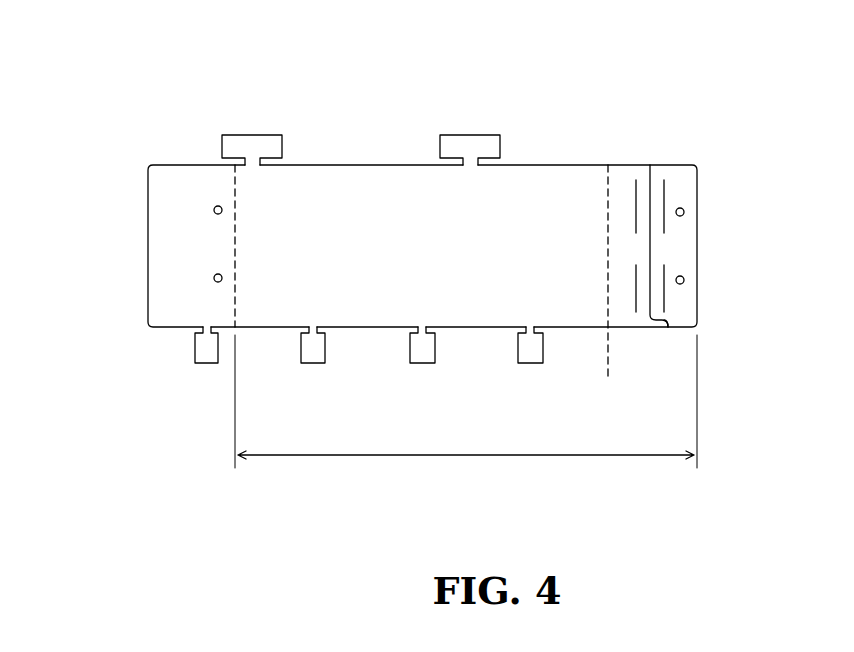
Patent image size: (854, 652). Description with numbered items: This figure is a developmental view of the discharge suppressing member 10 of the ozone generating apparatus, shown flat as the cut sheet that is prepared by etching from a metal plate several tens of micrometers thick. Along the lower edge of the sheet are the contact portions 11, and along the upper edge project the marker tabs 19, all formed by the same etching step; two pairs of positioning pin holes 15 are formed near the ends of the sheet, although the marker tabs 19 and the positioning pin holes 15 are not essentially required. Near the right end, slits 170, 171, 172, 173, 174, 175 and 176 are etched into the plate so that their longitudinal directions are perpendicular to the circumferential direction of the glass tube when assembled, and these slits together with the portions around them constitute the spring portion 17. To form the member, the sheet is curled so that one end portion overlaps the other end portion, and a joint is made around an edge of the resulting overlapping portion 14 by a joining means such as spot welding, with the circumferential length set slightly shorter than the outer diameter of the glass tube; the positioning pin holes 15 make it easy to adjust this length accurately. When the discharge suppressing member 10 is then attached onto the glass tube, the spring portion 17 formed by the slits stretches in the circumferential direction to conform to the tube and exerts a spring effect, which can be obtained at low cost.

The discharge suppressing member 10 is at (369, 40).
The contact portion 11 is at (212, 352).
The overlapping portion 14 is at (192, 225).
The positioning pin hole 15 is at (223, 210).
The spring portion 17 is at (666, 141).
The marker tab 19 is at (250, 135).
The slit 170 is at (656, 178).
The slit 171 is at (664, 190).
The slit 172 is at (636, 200).
The slit 173 is at (650, 253).
The slit 174 is at (664, 265).
The slit 175 is at (636, 275).
The slit 176 is at (668, 328).